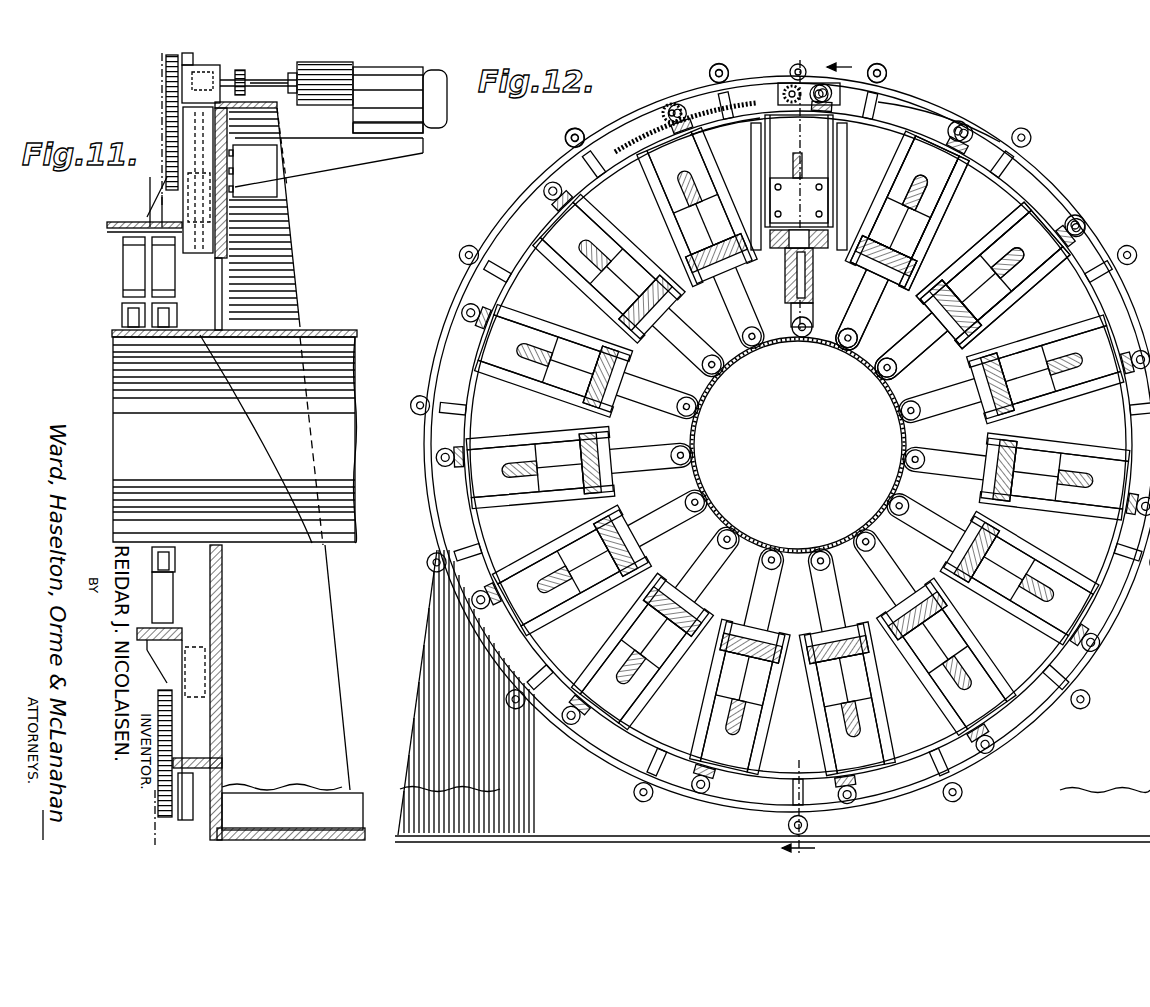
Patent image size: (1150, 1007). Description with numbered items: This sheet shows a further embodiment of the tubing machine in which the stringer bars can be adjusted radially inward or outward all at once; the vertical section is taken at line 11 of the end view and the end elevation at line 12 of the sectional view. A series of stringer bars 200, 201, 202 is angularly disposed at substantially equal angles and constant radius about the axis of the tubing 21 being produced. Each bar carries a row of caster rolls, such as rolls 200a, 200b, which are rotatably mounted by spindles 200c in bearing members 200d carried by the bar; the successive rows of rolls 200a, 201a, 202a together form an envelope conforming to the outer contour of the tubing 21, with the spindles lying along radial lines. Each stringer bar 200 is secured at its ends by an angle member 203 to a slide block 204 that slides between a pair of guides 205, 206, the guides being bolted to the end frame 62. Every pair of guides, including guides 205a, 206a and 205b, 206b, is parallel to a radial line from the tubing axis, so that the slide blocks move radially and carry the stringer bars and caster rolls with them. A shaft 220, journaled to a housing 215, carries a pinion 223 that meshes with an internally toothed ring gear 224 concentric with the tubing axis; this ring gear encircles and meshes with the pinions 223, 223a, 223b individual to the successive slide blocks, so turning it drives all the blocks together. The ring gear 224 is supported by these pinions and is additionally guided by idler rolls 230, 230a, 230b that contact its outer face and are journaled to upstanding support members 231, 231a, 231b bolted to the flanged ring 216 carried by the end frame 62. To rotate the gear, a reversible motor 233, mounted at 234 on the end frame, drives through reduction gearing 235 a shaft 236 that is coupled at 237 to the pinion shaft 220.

In FIG. 12, the section line 11— 11 is at (828, 457).
In FIG. 11, the section line 12— 12 is at (160, 57).
In FIG. 11, the tubing 21 is at (315, 330).
In FIG. 12, the tubing 21 is at (703, 423).
In FIG. 11, the end frame 62 is at (290, 250).
In FIG. 12, the end frame 62 is at (417, 700).
In FIG. 11, the stringer bar 200 is at (128, 208).
In FIG. 12, the stringer bar 200 is at (822, 213).
In FIG. 11, the caster roll 200a is at (160, 307).
In FIG. 12, the caster roll 200a is at (802, 342).
In FIG. 11, the caster roll 200b is at (128, 315).
In FIG. 12, the caster roll spindle 200c is at (810, 283).
In FIG. 12, the bearing member 200d is at (790, 284).
In FIG. 12, the stringer bar 201 is at (867, 241).
In FIG. 12, the caster roll 201a is at (848, 348).
In FIG. 12, the stringer bar 202 is at (993, 259).
In FIG. 12, the caster roll 202a is at (884, 376).
In FIG. 11, the angle member 203 is at (167, 192).
In FIG. 11, the slide block 204 is at (190, 137).
In FIG. 12, the slide block 204 is at (817, 143).
In FIG. 12, the guide 205 is at (792, 165).
In FIG. 12, the guide 205a is at (886, 165).
In FIG. 12, the guide 205b is at (985, 238).
In FIG. 12, the guide 206 is at (836, 163).
In FIG. 12, the guide 206a is at (952, 193).
In FIG. 12, the guide 206b is at (1040, 262).
In FIG. 11, the housing 215 is at (215, 73).
In FIG. 12, the housing 215 is at (780, 96).
In FIG. 12, the flanged ring 216 is at (596, 178).
In FIG. 11, the shaft 220 is at (165, 108).
In FIG. 12, the pinion 223 is at (783, 88).
In FIG. 12, the pinion 223a is at (964, 122).
In FIG. 12, the pinion 223b is at (1083, 220).
In FIG. 12, the ring gear 224 is at (623, 125).
In FIG. 12, the idler roll 230 is at (570, 128).
In FIG. 12, the idler roll 230a is at (709, 75).
In FIG. 12, the idler roll 230b is at (889, 74).
In FIG. 12, the support member 231 is at (596, 127).
In FIG. 12, the support member 231a is at (731, 115).
In FIG. 12, the support member 231b is at (878, 102).
In FIG. 11, the reversible motor 233 is at (440, 83).
In FIG. 11, the motor mounting 234 is at (365, 157).
In FIG. 11, the reduction gearing 235 is at (333, 80).
In FIG. 11, the shaft 236 is at (282, 88).
In FIG. 11, the coupling 237 is at (243, 80).